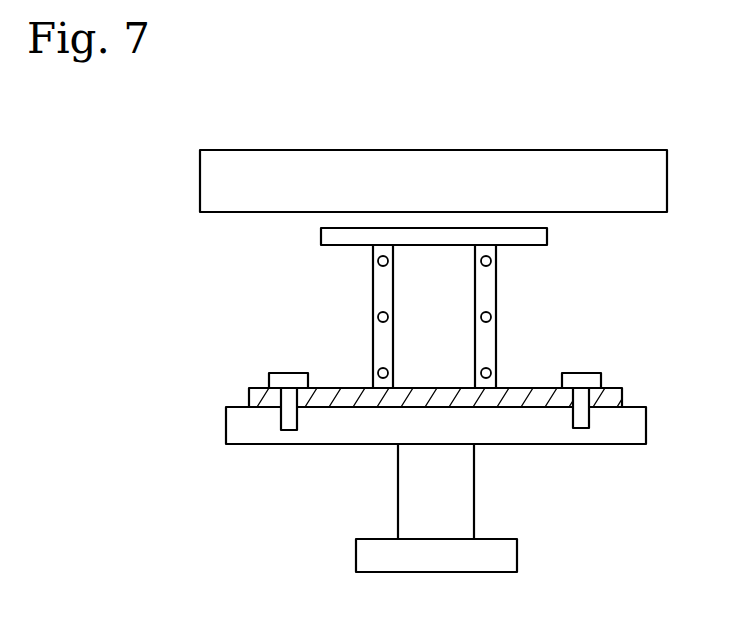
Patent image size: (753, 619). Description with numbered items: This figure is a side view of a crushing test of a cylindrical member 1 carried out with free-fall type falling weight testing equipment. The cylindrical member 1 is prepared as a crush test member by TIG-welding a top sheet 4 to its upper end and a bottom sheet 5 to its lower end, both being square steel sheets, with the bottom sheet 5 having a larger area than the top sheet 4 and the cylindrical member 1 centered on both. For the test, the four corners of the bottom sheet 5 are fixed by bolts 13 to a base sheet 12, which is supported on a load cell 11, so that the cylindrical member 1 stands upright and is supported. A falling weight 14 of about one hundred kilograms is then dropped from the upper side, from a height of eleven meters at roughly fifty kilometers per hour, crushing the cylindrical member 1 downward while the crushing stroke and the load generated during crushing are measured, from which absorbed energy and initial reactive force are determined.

The falling weight 14 is at (410, 150).
The top sheet 4 is at (513, 245).
The cylindrical member 1 is at (507, 333).
The bottom sheet 5 is at (333, 388).
The base sheet 12 is at (647, 423).
The bolt 13 is at (287, 373).
The load cell 11 is at (413, 495).